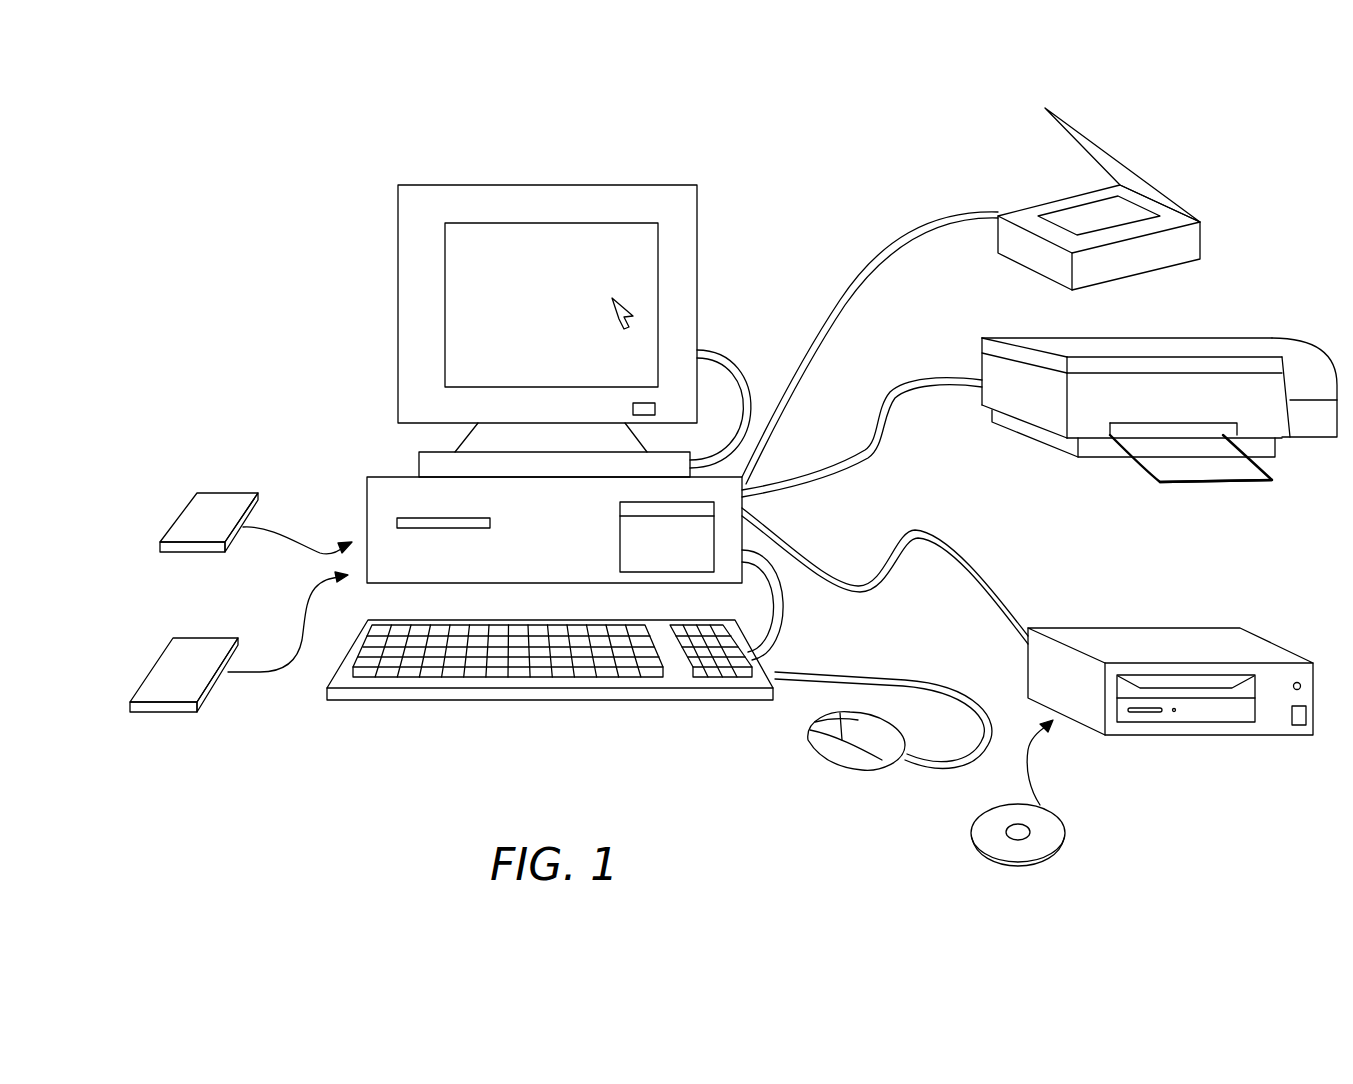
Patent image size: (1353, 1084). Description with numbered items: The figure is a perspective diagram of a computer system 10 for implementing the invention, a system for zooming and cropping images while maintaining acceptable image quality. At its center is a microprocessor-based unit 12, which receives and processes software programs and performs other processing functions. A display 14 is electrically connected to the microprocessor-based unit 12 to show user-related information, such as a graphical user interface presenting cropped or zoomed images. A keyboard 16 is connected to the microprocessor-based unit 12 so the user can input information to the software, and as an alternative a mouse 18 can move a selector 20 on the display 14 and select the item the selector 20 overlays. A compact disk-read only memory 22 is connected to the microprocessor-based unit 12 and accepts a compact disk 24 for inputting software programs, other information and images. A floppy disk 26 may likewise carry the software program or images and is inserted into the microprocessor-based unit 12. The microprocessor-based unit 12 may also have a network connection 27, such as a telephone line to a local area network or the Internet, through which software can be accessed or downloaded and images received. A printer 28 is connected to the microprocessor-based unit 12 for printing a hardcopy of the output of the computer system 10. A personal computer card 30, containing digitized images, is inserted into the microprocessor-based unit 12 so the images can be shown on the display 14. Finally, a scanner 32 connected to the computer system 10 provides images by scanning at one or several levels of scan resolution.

The computer system 10 is at (776, 230).
The microprocessor-based unit 12 is at (393, 477).
The display 14 is at (518, 185).
The keyboard 16 is at (375, 700).
The mouse 18 is at (847, 768).
The selector 20 is at (640, 300).
The compact disk-read only memory (CD-ROM) 22 is at (1135, 628).
The compact disk 24 is at (1062, 830).
The floppy disk 26 is at (177, 510).
The network connection 27 is at (367, 519).
The printer 28 is at (1062, 443).
The personal computer card (PC card) 30 is at (157, 655).
The scanner 32 is at (1200, 240).